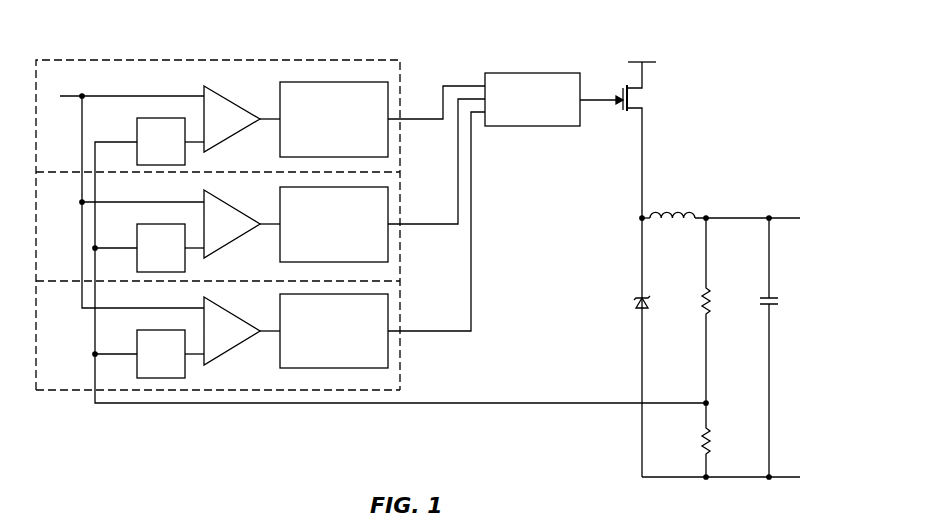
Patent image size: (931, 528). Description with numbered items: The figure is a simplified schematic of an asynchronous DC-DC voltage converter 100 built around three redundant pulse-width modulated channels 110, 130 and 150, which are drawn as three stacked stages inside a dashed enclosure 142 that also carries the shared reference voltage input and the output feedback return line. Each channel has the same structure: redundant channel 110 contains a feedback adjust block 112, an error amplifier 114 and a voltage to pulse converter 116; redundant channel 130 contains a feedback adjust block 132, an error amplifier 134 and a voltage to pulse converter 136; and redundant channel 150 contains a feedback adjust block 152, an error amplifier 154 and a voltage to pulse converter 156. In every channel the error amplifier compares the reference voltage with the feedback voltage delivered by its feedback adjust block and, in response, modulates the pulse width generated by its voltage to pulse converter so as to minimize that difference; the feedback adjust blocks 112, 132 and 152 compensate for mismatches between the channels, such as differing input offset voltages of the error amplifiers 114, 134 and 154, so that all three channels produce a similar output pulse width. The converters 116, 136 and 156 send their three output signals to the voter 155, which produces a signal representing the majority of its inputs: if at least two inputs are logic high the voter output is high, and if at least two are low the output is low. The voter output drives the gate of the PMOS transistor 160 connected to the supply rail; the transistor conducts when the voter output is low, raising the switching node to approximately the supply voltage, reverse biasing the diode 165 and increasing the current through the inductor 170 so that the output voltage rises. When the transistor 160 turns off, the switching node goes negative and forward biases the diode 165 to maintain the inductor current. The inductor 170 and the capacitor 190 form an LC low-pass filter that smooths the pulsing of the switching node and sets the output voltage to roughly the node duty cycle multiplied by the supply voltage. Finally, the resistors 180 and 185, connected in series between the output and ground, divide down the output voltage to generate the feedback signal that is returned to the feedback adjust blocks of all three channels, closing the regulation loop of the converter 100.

The asynchronous DC-DC voltage converter 100 is at (725, 30).
The redundant PWM channel 110 is at (403, 88).
The feedback adjust block 112 is at (135, 138).
The error amplifier 114 is at (232, 119).
The voltage to pulse converter 116 is at (278, 110).
The redundant PWM channel 130 is at (403, 194).
The feedback adjust block 132 is at (135, 244).
The error amplifier 134 is at (232, 224).
The voltage to pulse converter 136 is at (278, 215).
The regulation circuitry 142 is at (212, 60).
The redundant PWM channel 150 is at (403, 298).
The feedback adjust block 152 is at (135, 350).
The error amplifier 154 is at (232, 331).
The voter 155 is at (534, 127).
The voltage to pulse converter 156 is at (278, 322).
The PMOS transistor 160 is at (620, 107).
The diode 165 is at (637, 304).
The inductor 170 is at (680, 212).
The resistor 180 is at (700, 300).
The resistor 185 is at (700, 438).
The capacitor 190 is at (760, 300).